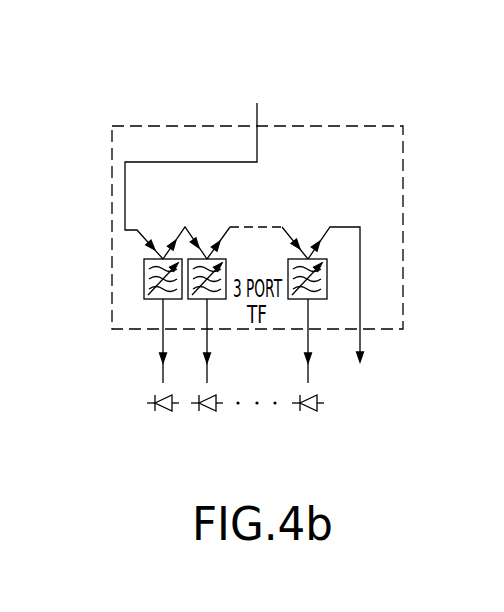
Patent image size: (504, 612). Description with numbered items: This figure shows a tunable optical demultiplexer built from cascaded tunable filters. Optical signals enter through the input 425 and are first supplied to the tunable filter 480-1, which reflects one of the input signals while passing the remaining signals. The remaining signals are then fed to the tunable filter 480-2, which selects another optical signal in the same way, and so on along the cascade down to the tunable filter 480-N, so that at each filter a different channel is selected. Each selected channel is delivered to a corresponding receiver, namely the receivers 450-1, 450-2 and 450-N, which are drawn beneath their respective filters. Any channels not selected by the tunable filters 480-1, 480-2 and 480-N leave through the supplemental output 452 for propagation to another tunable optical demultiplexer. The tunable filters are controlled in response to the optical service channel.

The input 425 is at (257, 122).
The supplemental output 452 is at (360, 362).
The tunable filter 480-1 is at (144, 280).
The tunable filter 480-2 is at (215, 299).
The tunable filter 480-N is at (322, 299).
The receiver 450-1 is at (170, 413).
The receiver 450-2 is at (207, 413).
The receiver 450-N is at (308, 413).